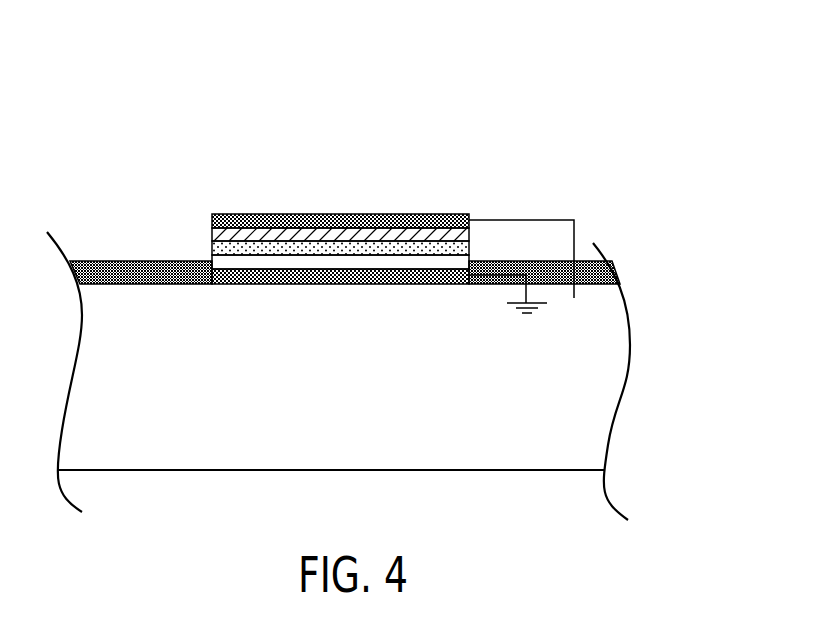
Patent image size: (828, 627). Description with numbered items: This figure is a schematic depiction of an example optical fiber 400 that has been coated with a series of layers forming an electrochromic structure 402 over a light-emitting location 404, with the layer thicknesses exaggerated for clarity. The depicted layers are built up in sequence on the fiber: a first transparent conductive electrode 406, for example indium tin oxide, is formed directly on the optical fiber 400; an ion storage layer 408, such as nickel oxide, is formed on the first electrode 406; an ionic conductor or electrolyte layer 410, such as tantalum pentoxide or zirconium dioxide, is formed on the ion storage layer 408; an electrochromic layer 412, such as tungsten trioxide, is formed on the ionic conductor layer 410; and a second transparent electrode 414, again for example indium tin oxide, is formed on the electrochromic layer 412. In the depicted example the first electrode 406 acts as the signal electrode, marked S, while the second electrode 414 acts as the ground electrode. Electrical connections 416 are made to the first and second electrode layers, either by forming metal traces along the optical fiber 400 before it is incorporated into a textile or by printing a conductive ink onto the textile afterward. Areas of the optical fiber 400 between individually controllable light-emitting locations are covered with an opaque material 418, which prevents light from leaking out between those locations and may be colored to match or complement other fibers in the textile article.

The optical fiber 400 is at (372, 293).
The electrochromic structure 402 is at (340, 196).
The light-emitting location 404 is at (291, 303).
The first transparent conductive electrode 406 is at (277, 276).
The ion storage layer 408 is at (258, 262).
The ionic conductor layer 410 is at (243, 248).
The electrochromic layer 412 is at (230, 235).
The second transparent electrode 414 is at (215, 215).
The electrical connections 416 is at (490, 222).
The opaque material 418 is at (128, 262).